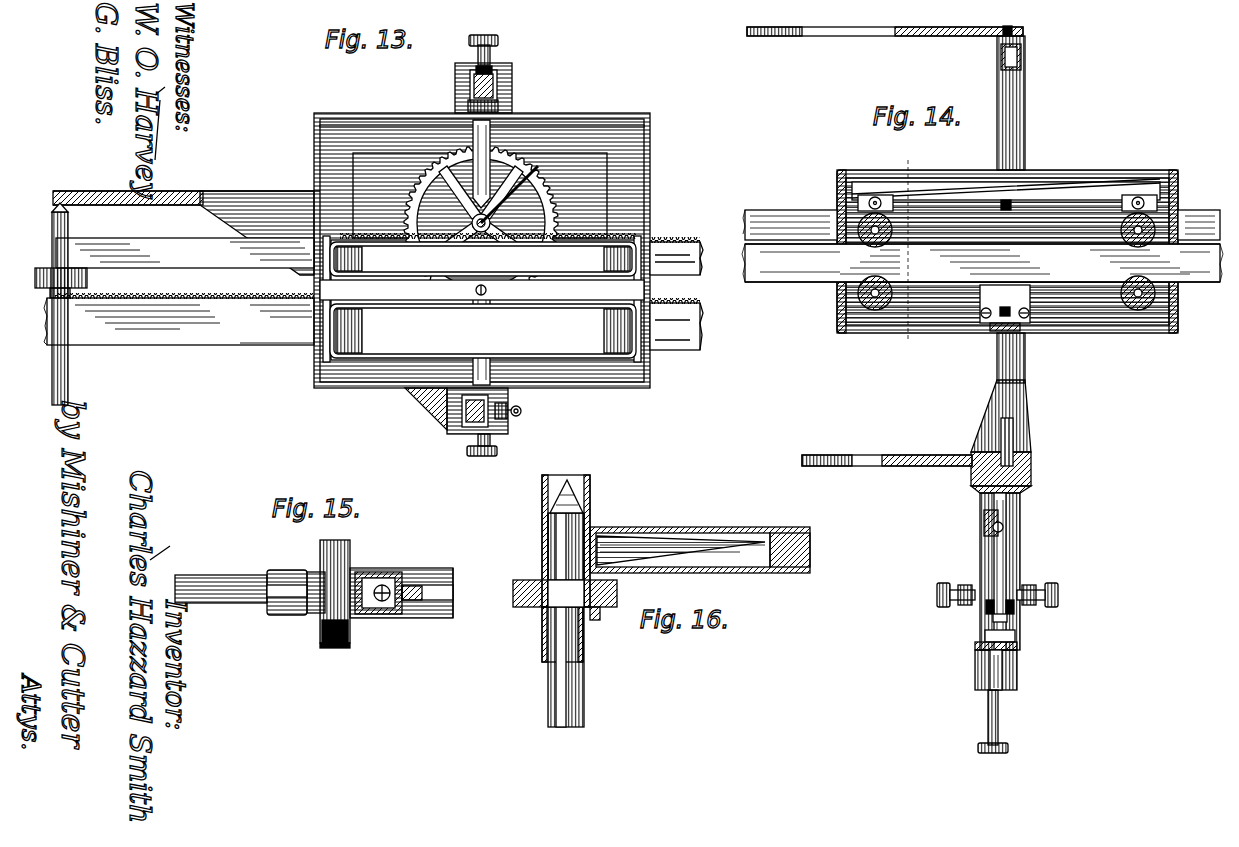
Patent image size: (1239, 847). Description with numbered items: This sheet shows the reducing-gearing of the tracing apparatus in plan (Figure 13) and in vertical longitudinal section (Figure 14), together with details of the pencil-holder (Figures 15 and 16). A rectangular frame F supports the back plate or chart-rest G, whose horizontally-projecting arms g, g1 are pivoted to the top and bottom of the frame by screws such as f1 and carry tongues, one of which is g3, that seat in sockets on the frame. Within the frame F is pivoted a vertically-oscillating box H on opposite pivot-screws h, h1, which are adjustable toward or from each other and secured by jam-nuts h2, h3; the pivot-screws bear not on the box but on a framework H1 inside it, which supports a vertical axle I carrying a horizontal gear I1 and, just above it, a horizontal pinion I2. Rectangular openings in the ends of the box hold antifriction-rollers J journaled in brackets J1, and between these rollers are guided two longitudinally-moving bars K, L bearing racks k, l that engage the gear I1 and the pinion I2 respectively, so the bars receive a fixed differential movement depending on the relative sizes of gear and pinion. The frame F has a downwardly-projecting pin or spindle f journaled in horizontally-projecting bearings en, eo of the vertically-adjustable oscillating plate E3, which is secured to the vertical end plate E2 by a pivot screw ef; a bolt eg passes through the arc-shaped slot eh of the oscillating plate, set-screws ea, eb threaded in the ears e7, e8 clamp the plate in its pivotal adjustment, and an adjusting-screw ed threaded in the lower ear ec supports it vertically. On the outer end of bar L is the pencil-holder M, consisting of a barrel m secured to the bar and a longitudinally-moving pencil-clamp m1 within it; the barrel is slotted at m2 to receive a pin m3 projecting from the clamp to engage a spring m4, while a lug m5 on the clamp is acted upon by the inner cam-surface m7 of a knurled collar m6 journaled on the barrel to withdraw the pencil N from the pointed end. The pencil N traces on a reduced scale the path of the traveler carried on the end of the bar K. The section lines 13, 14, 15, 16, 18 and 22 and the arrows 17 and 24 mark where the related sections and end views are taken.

In FIG. 13, the back plate or chart-rest G is at (186, 222).
In FIG. 13, the longitudinally-moving bar L is at (185, 253).
In FIG. 14, the longitudinally-moving bar L is at (770, 210).
In FIG. 13, the longitudinally-moving bar K is at (179, 319).
In FIG. 14, the longitudinally-moving bar K is at (982, 263).
In FIG. 13, the pencil N is at (70, 378).
In FIG. 15, the pencil N is at (255, 604).
In FIG. 16, the pencil N is at (581, 688).
In FIG. 13, the pencil-holder M is at (70, 235).
In FIG. 15, the pencil-holder M is at (348, 591).
In FIG. 16, the pencil-holder M is at (520, 622).
In FIG. 13, the vertically-oscillating box H is at (652, 158).
In FIG. 14, the vertically-oscillating box H is at (1180, 200).
In FIG. 13, the framework H1 is at (643, 233).
In FIG. 14, the framework H1 is at (862, 335).
In FIG. 13, the vertical axle I is at (505, 170).
In FIG. 14, the vertical axle I is at (1040, 198).
In FIG. 13, the horizontal gear I1 is at (540, 172).
In FIG. 13, the horizontal pinion I2 is at (448, 172).
In FIG. 13, the antifriction-rollers J is at (483, 300).
In FIG. 14, the antifriction-rollers J is at (878, 184).
In FIG. 13, the brackets J1 is at (325, 262).
In FIG. 14, the brackets J1 is at (852, 205).
In FIG. 13, the rectangular frame F is at (513, 88).
In FIG. 14, the rectangular frame F is at (1026, 80).
In FIG. 13, the pivot-screw h is at (483, 457).
In FIG. 13, the pivot-screw h1 is at (498, 41).
In FIG. 13, the jam-nut h2 is at (478, 445).
In FIG. 13, the jam-nut h3 is at (500, 74).
In FIG. 14, the horizontally-projecting arm g is at (865, 36).
In FIG. 13, the horizontally-projecting arm g1 is at (447, 398).
In FIG. 14, the horizontally-projecting arm g1 is at (862, 467).
In FIG. 13, the tongue g3 is at (520, 408).
In FIG. 14, the pin or spindle f is at (984, 518).
In FIG. 14, the screw f1 is at (1013, 30).
In FIG. 13, the rack l is at (672, 241).
In FIG. 13, the rack k is at (690, 303).
In FIG. 14, the vertical end plate E2 is at (1018, 667).
In FIG. 14, the oscillating plate E3 is at (1021, 557).
In FIG. 14, the set-screw ea is at (937, 595).
In FIG. 14, the set-screw eb is at (1058, 595).
In FIG. 14, the forwardly-projecting ear ec is at (986, 696).
In FIG. 14, the adjusting-screw ed is at (1000, 742).
In FIG. 14, the screw ef is at (1004, 527).
In FIG. 14, the bolt eg is at (990, 595).
In FIG. 14, the arc-shaped slot eh is at (985, 628).
In FIG. 14, the bearing en is at (1022, 487).
In FIG. 14, the bearing eo is at (1018, 646).
In FIG. 14, the ear e7 is at (980, 612).
In FIG. 14, the ear e8 is at (1022, 612).
In FIG. 15, the barrel or tube m is at (407, 618).
In FIG. 16, the barrel or tube m is at (545, 557).
In FIG. 15, the pencil-clamp m1 is at (283, 572).
In FIG. 16, the pencil-clamp m1 is at (548, 530).
In FIG. 15, the slot m2 is at (420, 582).
In FIG. 16, the slot m2 is at (596, 530).
In FIG. 15, the pin or screw m3 is at (395, 580).
In FIG. 16, the pin or screw m3 is at (640, 533).
In FIG. 15, the spring m4 is at (380, 585).
In FIG. 16, the spring m4 is at (700, 542).
In FIG. 15, the lug m5 is at (287, 616).
In FIG. 15, the collar m6 is at (332, 644).
In FIG. 16, the collar m6 is at (598, 618).
In FIG. 15, the cam-surface m7 is at (327, 562).
In FIG. 14, the section line 13 is at (1050, 140).
In FIG. 13, the section line 14 is at (716, 353).
In FIG. 13, the section line 15 is at (127, 278).
In FIG. 15, the section line 16 is at (175, 595).
In FIG. 13, the arrow 17 is at (668, 118).
In FIG. 14, the arrow 17 is at (1118, 365).
In FIG. 14, the section line 18 is at (1024, 372).
In FIG. 14, the section line 22 is at (912, 348).
In FIG. 16, the arrow 24 is at (653, 662).